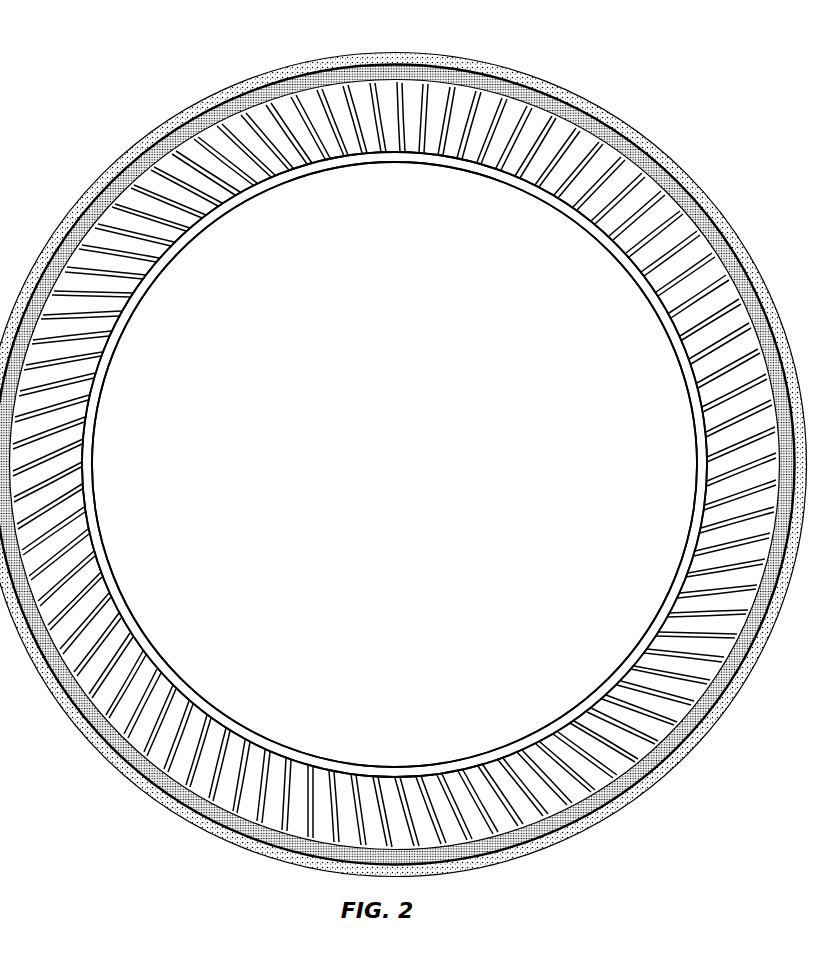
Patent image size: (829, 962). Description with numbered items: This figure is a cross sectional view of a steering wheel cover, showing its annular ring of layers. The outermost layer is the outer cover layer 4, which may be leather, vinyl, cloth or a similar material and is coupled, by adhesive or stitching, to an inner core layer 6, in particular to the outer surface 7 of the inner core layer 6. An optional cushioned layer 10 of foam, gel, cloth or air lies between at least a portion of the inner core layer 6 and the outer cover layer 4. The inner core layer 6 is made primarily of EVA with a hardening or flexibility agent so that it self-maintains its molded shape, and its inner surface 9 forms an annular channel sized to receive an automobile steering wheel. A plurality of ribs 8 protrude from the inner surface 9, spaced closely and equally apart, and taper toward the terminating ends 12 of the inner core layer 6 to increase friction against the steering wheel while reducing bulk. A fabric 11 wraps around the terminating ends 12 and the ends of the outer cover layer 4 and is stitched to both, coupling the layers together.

The outer cover layer 4 is at (403, 54).
The inner core layer 6 is at (453, 126).
The outer surface 7 is at (494, 75).
The ribs 8 is at (656, 168).
The inner surface 9 is at (538, 173).
The cushioned layer 10 is at (563, 102).
The fabric 11 is at (687, 374).
The terminating ends 12 is at (557, 208).